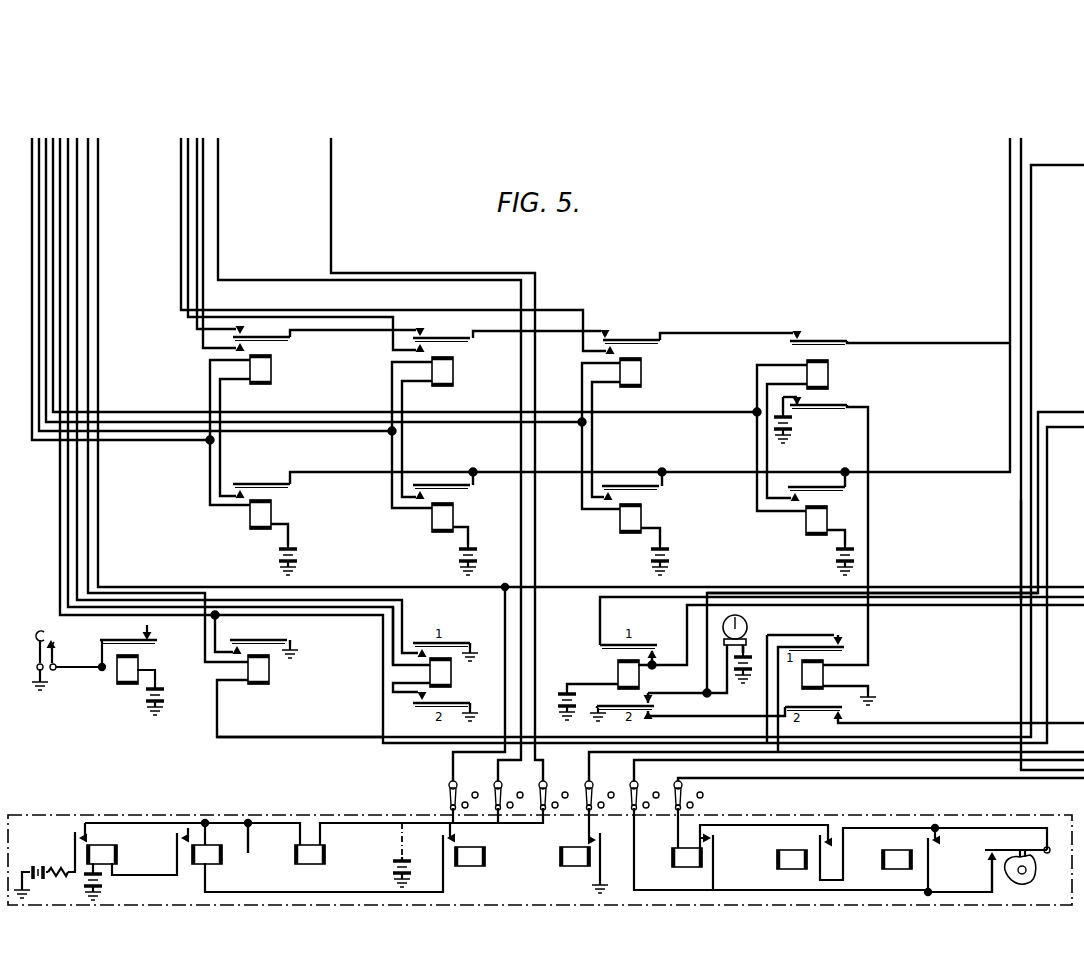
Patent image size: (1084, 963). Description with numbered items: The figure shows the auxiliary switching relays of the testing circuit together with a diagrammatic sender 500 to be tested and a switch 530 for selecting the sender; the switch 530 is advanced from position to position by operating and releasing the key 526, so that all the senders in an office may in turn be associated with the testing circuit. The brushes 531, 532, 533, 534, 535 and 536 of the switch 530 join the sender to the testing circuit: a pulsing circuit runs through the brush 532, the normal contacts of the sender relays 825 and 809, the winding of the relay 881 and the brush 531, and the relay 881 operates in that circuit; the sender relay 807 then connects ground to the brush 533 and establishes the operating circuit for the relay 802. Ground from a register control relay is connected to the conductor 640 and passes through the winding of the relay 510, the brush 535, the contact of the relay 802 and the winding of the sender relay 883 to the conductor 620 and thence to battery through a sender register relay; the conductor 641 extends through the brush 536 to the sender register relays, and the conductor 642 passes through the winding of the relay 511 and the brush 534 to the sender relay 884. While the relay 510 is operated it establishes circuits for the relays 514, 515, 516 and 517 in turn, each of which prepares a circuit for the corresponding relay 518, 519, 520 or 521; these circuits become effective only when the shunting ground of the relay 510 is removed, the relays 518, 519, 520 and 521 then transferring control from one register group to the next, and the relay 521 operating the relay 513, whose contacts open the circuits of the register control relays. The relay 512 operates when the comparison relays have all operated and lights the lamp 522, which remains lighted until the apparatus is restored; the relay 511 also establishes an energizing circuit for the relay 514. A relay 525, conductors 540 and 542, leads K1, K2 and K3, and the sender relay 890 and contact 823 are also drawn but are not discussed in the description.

The relay 518 is at (271, 369).
The relay 519 is at (453, 371).
The relay 520 is at (641, 372).
The relay 521 is at (828, 374).
The relay 514 is at (249, 514).
The relay 515 is at (431, 518).
The relay 516 is at (619, 520).
The relay 517 is at (805, 522).
The relay 510 is at (268, 672).
The relay 511 is at (450, 673).
The relay 512 is at (638, 677).
The relay 513 is at (823, 676).
The lamp 522 is at (745, 617).
The relay 525 is at (118, 687).
The key 526 is at (50, 644).
The conductor 540 is at (184, 598).
The conductor 542 is at (391, 640).
The conductor 640 is at (260, 734).
The conductor 641 is at (905, 592).
The conductor 642 is at (1045, 566).
The conductor K1 is at (522, 627).
The conductor K2 is at (504, 620).
The conductor K3 is at (536, 652).
The switch 530 is at (704, 804).
The brush 531 is at (676, 784).
The brush 532 is at (632, 784).
The brush 533 is at (587, 784).
The brush 534 is at (541, 784).
The brush 535 is at (496, 784).
The brush 536 is at (451, 784).
The sender 500 is at (540, 857).
The relay 890 is at (115, 853).
The sender relay 883 is at (215, 864).
The conductor 620 is at (266, 838).
The sender relay 884 is at (325, 855).
The sender relay 802 is at (480, 860).
The sender relay 807 is at (566, 838).
The sender relay 881 is at (672, 848).
The sender relay 809 is at (777, 860).
The sender relay 825 is at (890, 850).
The contact 823 is at (988, 854).